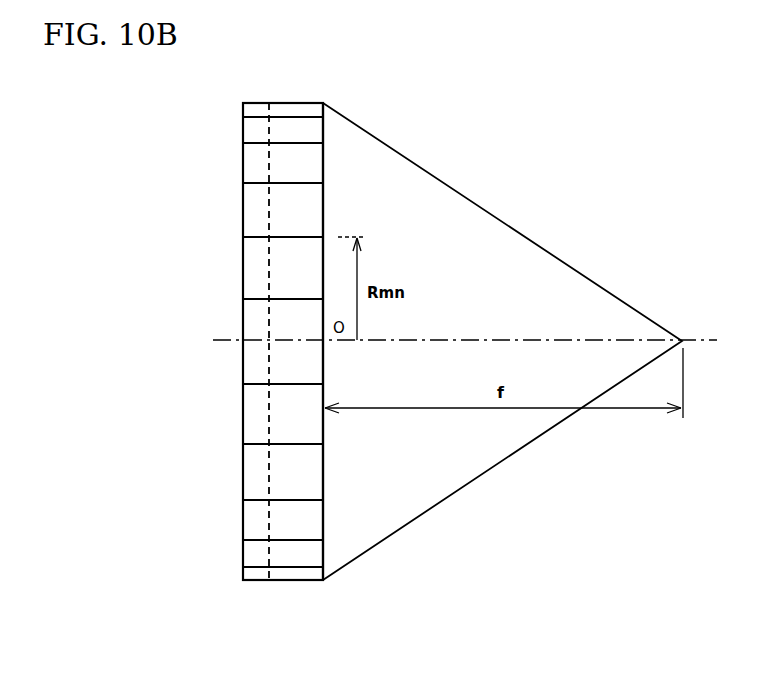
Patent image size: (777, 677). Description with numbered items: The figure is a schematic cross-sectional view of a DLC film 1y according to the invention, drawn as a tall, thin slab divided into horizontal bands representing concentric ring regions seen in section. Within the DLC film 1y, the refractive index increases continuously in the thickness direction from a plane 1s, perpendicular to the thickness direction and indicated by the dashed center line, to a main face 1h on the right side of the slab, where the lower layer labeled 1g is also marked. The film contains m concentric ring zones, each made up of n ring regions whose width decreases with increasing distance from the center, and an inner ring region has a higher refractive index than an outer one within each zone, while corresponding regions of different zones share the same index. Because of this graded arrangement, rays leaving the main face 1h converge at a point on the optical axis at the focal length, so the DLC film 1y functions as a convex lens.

The plane perpendicular to the thickness direction 1s is at (270, 522).
The gap layer 1g is at (244, 553).
The DLC film 1y is at (297, 582).
The main face 1h is at (325, 518).